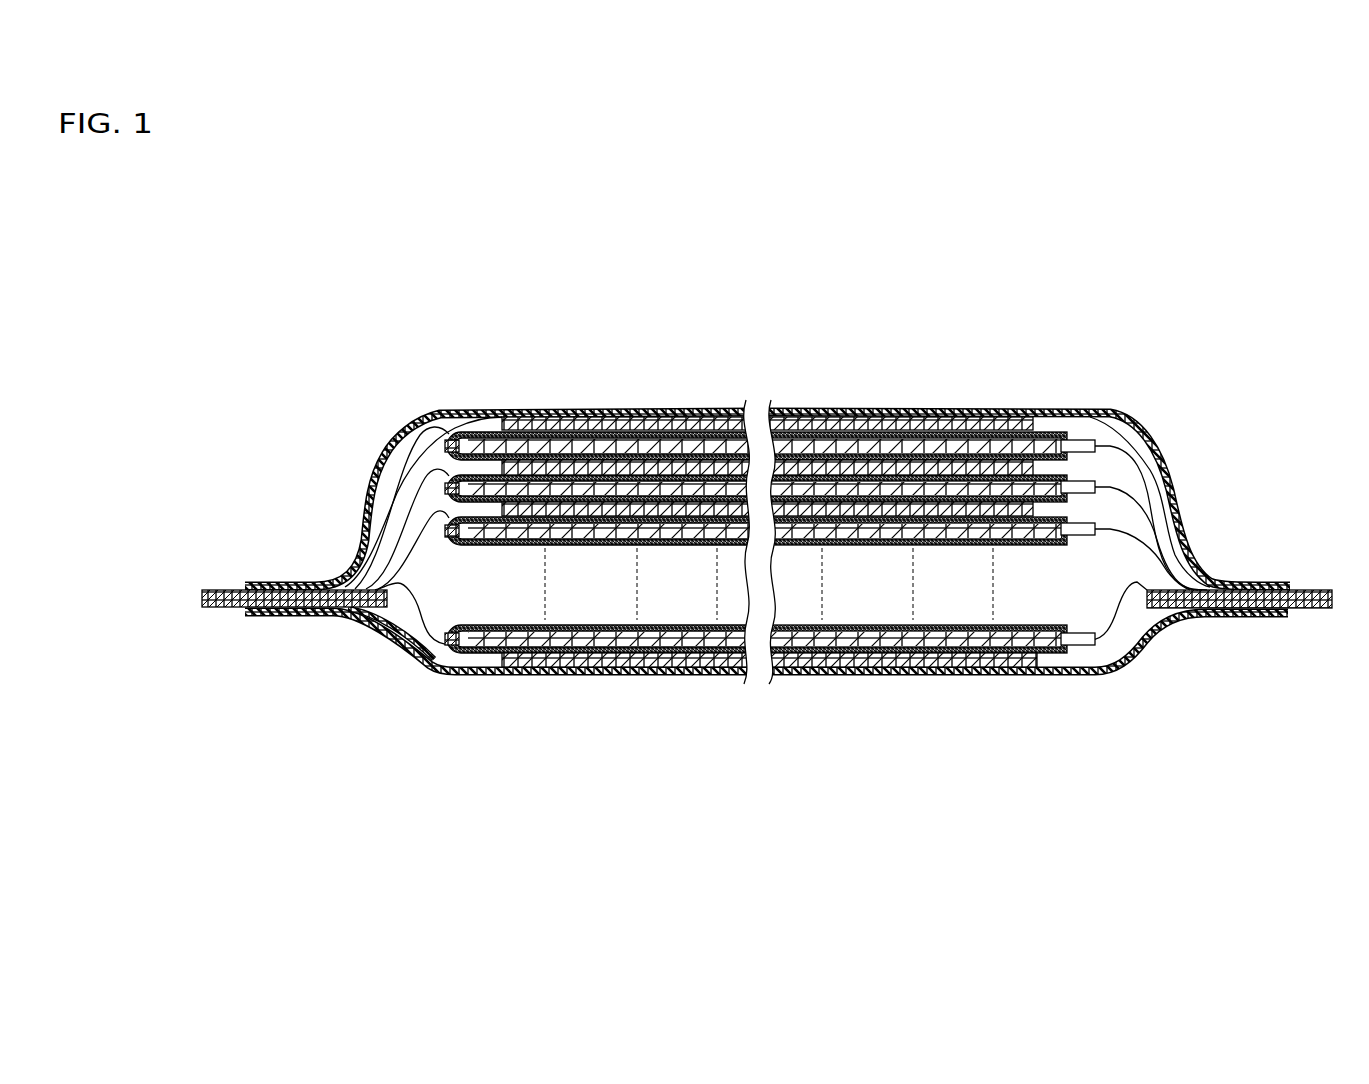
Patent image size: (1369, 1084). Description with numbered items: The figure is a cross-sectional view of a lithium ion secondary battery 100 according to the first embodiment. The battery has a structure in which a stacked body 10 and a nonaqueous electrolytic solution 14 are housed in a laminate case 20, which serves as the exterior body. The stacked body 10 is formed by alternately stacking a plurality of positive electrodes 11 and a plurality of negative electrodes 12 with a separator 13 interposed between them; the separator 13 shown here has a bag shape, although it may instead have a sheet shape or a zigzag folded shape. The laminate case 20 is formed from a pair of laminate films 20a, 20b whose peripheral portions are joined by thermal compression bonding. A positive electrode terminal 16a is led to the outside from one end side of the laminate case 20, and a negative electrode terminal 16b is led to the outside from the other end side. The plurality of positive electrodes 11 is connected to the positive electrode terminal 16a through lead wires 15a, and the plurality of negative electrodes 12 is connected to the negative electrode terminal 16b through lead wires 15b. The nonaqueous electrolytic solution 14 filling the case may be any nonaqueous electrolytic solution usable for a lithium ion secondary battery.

The lithium ion secondary battery 100 is at (368, 380).
The stacked body 10 is at (425, 612).
The positive electrode 11 is at (715, 412).
The negative electrode 12 is at (658, 416).
The separator 13 is at (595, 414).
The nonaqueous electrolytic solution 14 is at (1135, 618).
The lead wires 15a is at (1133, 447).
The lead wires 15b is at (412, 648).
The positive electrode terminal 16a is at (1320, 590).
The negative electrode terminal 16b is at (225, 590).
The laminate case 20 is at (478, 698).
The laminate film 20a is at (507, 410).
The laminate film 20b is at (965, 677).